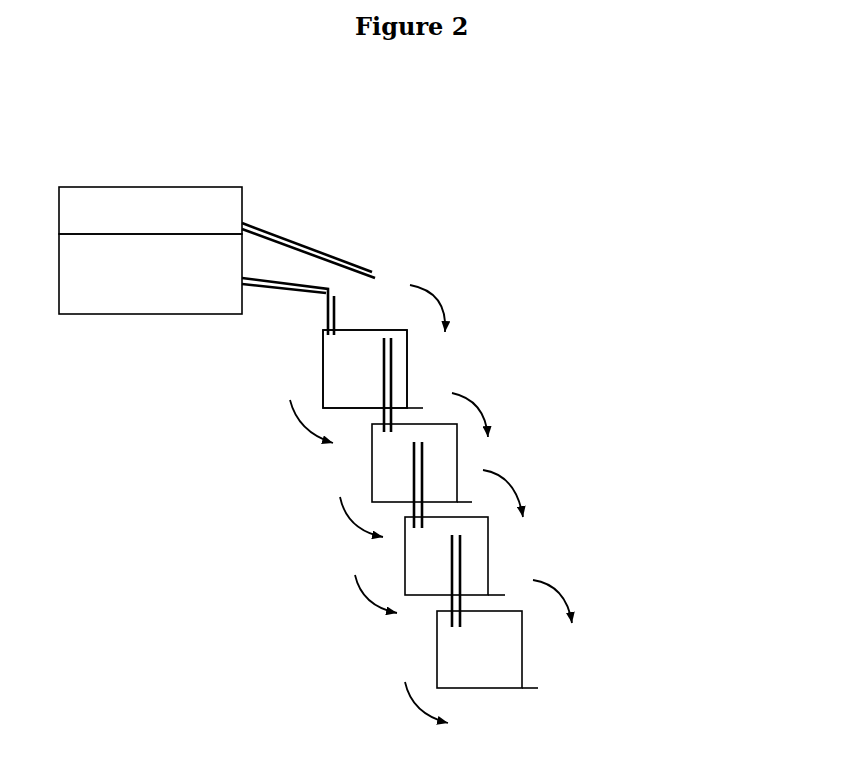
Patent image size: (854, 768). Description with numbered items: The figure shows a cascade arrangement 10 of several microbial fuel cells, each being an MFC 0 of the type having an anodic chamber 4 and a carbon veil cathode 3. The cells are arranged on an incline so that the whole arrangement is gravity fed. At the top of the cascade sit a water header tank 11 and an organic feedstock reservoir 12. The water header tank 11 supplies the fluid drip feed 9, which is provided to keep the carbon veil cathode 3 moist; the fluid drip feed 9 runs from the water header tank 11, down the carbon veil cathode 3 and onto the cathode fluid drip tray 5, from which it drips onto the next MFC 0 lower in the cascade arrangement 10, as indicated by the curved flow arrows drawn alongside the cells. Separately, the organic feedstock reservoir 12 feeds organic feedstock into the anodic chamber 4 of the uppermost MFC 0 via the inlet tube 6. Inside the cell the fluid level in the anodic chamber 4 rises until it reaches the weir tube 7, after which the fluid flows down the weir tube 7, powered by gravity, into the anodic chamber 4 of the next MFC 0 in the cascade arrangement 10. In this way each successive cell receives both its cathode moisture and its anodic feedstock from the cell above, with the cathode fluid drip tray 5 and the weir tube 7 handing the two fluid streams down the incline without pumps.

The cascade arrangement 10 is at (597, 227).
The water header tank 11 is at (150, 210).
The organic feedstock reservoir 12 is at (150, 274).
The inlet tube 6 is at (300, 297).
The carbon veil cathode 3 is at (413, 358).
The anodic chamber 4 is at (365, 369).
The weir tube 7 is at (377, 342).
The cathode fluid drip tray 5 is at (417, 406).
The fluid drip feed 9 is at (438, 303).
The MFC 0 is at (433, 645).